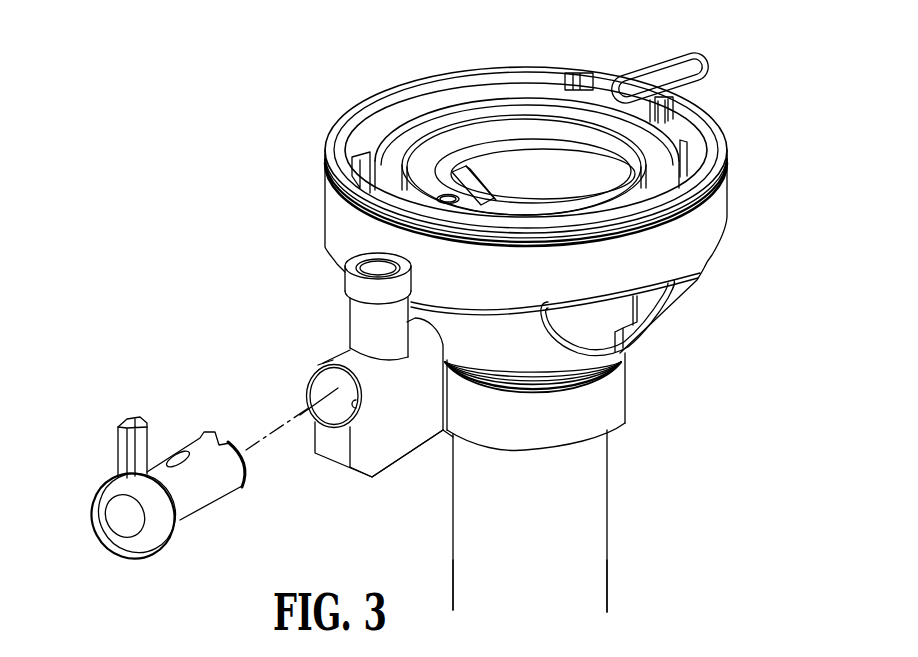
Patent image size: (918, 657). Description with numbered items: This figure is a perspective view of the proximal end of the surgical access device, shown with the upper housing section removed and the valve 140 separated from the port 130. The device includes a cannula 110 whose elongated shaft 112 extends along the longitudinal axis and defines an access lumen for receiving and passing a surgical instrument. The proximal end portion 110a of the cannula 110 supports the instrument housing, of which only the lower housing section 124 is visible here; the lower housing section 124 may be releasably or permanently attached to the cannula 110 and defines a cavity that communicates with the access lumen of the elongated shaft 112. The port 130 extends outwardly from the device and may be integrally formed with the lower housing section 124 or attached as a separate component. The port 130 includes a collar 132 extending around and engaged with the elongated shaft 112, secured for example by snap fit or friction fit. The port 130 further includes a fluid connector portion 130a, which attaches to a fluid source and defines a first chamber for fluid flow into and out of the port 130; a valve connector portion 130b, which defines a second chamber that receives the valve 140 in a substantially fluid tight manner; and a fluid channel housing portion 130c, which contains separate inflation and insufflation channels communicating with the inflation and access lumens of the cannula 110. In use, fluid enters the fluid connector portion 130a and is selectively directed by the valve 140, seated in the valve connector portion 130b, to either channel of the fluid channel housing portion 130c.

The cannula 110 is at (635, 515).
The proximal end portion 110a is at (650, 362).
The elongated shaft 112 is at (608, 568).
The lower housing section 124 is at (323, 220).
The port 130 is at (330, 393).
The fluid connector portion 130a is at (348, 318).
The valve connector portion 130b is at (336, 349).
The fluid channel housing portion 130c is at (377, 447).
The collar 132 is at (610, 402).
The valve 140 is at (149, 409).